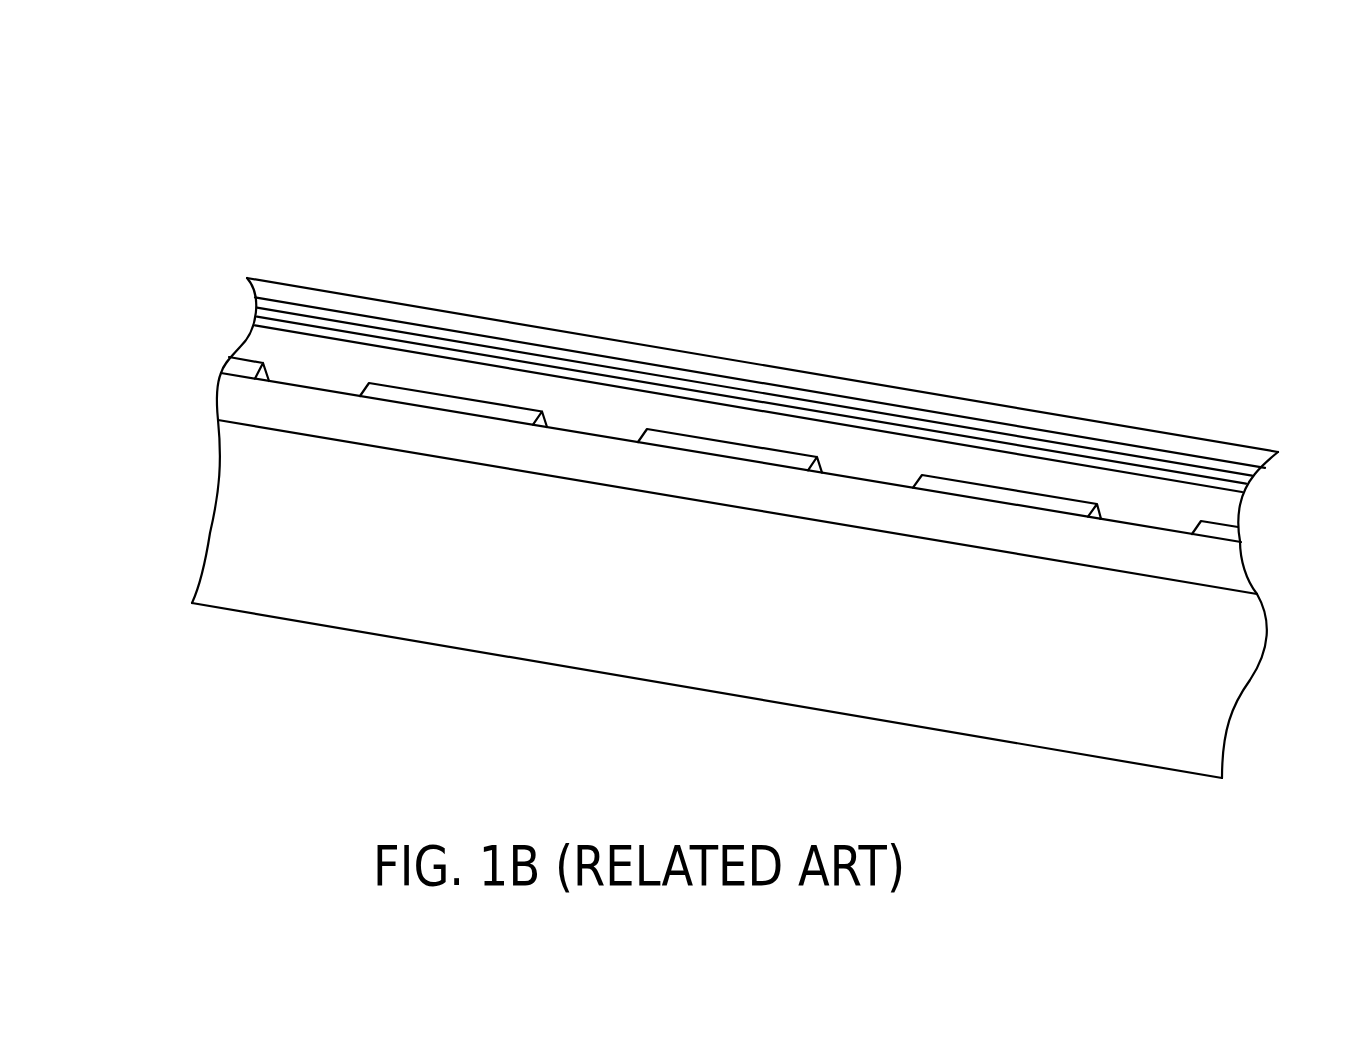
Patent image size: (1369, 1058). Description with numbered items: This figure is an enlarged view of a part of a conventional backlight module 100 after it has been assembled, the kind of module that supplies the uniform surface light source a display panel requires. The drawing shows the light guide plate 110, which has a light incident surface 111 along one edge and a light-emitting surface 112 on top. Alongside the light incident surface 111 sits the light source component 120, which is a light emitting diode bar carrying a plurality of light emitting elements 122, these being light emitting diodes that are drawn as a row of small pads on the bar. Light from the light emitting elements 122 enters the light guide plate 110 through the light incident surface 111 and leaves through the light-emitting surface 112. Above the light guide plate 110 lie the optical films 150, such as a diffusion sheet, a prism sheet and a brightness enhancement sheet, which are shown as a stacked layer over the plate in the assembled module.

The backlight module 100 is at (145, 98).
The light guide plate 110 is at (400, 370).
The light incident surface 111 is at (1163, 514).
The light-emitting surface 112 is at (533, 373).
The light source component 120 is at (283, 567).
The light emitting elements 122 is at (383, 392).
The optical films 150 is at (749, 365).